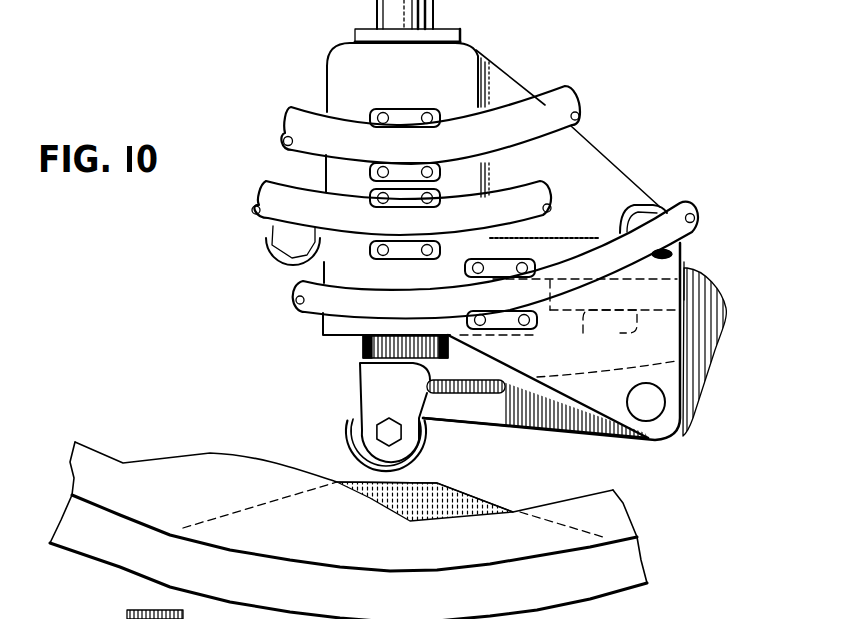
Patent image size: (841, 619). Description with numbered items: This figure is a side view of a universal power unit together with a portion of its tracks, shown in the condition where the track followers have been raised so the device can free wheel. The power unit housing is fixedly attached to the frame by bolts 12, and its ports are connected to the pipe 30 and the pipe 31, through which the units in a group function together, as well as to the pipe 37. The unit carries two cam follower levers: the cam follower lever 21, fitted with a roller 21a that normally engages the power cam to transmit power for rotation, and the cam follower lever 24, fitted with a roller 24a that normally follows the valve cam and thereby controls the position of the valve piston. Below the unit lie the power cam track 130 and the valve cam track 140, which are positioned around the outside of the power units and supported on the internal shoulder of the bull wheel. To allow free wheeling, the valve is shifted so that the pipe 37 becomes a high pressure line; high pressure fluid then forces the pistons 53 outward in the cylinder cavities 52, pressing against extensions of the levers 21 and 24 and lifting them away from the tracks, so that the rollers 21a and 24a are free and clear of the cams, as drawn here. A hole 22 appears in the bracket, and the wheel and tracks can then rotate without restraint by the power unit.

The bolts 12 is at (287, 243).
The cam follower lever 21 is at (486, 383).
The roller 21a is at (360, 421).
The bracket hole 22 is at (656, 417).
The cam follower lever 24 is at (498, 418).
The roller 24a is at (414, 461).
The pipe 30 is at (549, 98).
The pipe 31 is at (531, 190).
The pipe 37 is at (676, 208).
The cylinder cavities 52 is at (541, 312).
The pistons 53 is at (684, 270).
The power cam track 130 is at (471, 497).
The valve cam track 140 is at (200, 460).